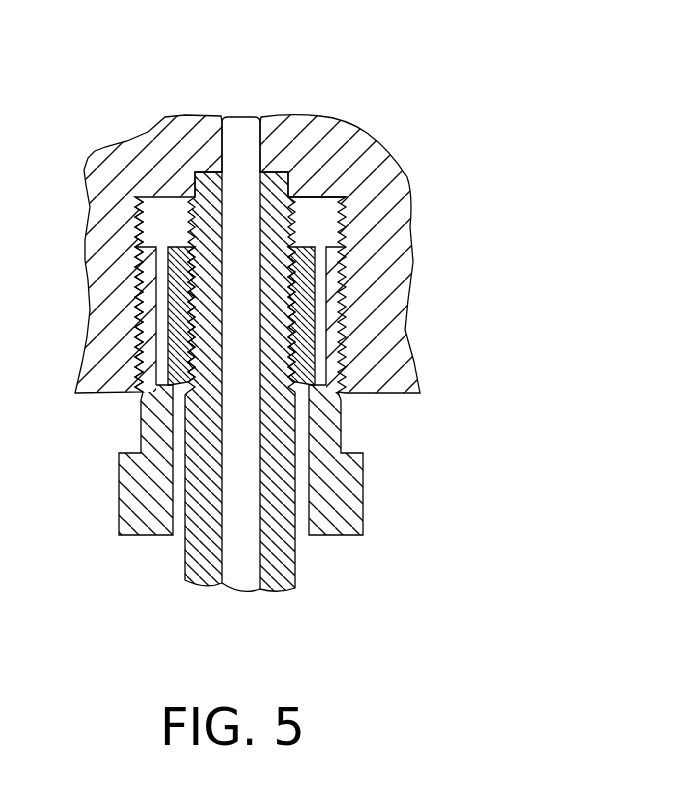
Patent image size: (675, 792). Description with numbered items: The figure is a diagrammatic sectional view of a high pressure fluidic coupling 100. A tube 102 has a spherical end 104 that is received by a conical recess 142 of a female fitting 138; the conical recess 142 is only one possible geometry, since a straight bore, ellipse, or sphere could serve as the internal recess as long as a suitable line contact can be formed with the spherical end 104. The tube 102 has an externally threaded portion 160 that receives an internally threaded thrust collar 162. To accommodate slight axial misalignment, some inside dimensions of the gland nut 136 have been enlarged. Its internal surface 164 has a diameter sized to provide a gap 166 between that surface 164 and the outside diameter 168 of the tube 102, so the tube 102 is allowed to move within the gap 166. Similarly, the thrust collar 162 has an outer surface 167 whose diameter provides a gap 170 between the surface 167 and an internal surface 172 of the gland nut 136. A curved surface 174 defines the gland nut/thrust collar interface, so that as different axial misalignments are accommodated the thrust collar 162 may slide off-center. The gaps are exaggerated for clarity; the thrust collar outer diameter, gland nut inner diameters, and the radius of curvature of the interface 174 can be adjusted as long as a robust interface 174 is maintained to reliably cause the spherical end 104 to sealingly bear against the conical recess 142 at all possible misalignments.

The coupling 100 is at (273, 333).
The tube 102 is at (185, 563).
The spherical end 104 is at (193, 245).
The gland nut 136 is at (363, 520).
The female fitting 138 is at (138, 240).
The conical recess 142 is at (235, 170).
The externally threaded portion 160 is at (288, 230).
The thrust collar 162 is at (322, 240).
The internal surface 164 is at (302, 520).
The gap 166 is at (178, 530).
The outer surface 167 is at (312, 291).
The outside diameter 168 is at (298, 578).
The gap 170 is at (320, 303).
The internal surface 172 is at (158, 340).
The curved surface 174 is at (170, 385).